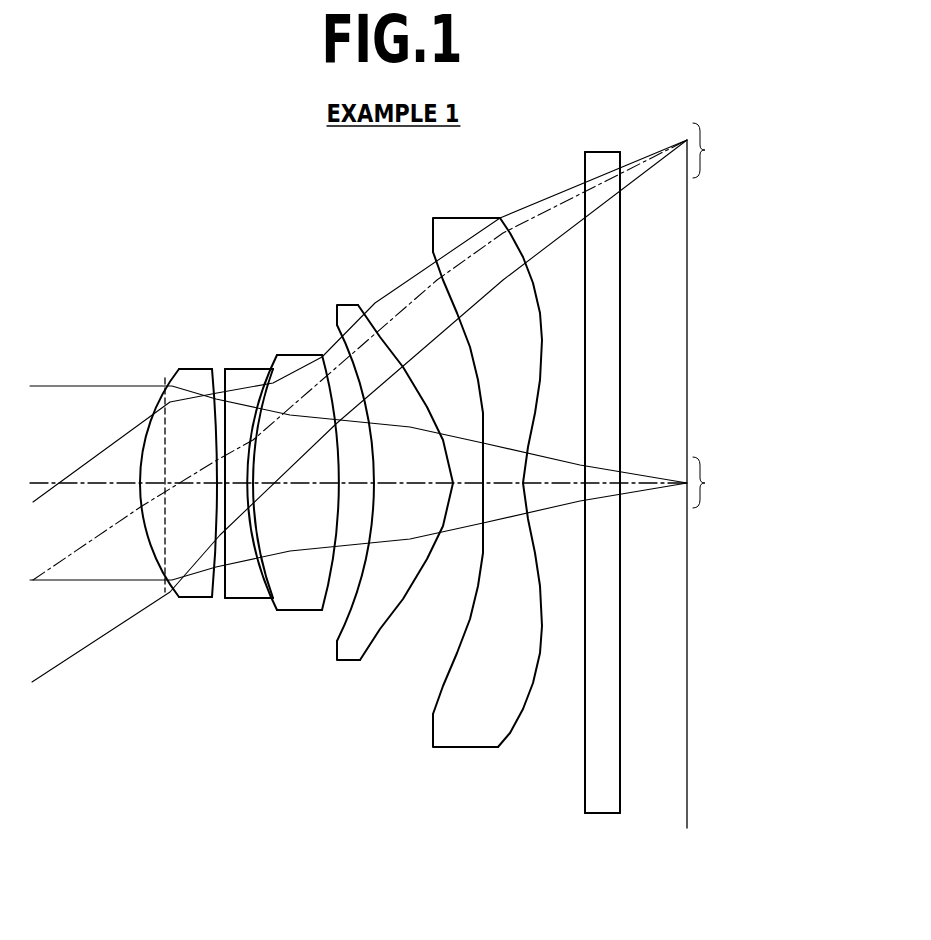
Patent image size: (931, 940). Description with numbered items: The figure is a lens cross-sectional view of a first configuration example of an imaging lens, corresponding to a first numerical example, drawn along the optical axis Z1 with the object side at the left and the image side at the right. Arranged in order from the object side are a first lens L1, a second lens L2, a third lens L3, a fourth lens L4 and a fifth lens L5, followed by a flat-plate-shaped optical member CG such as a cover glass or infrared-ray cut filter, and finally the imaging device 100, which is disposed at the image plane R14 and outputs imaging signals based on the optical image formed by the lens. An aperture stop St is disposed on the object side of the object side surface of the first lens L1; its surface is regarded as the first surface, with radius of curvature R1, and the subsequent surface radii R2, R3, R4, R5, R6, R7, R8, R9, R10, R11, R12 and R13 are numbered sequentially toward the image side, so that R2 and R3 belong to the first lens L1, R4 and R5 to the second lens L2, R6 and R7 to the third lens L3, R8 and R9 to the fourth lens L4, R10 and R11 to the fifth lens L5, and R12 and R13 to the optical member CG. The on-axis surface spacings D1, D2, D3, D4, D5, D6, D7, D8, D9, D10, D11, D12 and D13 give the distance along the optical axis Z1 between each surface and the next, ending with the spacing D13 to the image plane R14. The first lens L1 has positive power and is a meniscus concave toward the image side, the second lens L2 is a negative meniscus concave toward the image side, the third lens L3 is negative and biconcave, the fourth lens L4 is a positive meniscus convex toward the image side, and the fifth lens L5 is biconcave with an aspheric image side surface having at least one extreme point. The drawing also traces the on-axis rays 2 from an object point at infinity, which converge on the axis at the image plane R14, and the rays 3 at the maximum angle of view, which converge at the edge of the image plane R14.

The aperture stop St is at (137, 441).
The first surface radius of curvature R1 is at (166, 400).
The first lens L1 is at (162, 521).
The second lens L2 is at (232, 521).
The third lens L3 is at (293, 514).
The fourth lens L4 is at (380, 523).
The fifth lens L5 is at (461, 516).
The optical member CG is at (638, 507).
The optical axis Z1 is at (44, 481).
The on-axis rays 2 is at (707, 482).
The rays at the maximum angle of view 3 is at (707, 150).
The imaging device 100 is at (755, 484).
The image plane R14 is at (688, 532).
The on-axis surface spacing D1 is at (158, 480).
The on-axis surface spacing D2 is at (200, 480).
The on-axis surface spacing D3 is at (218, 502).
The on-axis surface spacing D4 is at (240, 480).
The on-axis surface spacing D5 is at (280, 480).
The on-axis surface spacing D6 is at (318, 497).
The on-axis surface spacing D7 is at (358, 478).
The on-axis surface spacing D8 is at (428, 479).
The on-axis surface spacing D9 is at (466, 490).
The on-axis surface spacing D10 is at (508, 478).
The on-axis surface spacing D11 is at (562, 480).
The on-axis surface spacing D12 is at (603, 483).
The on-axis surface spacing D13 is at (641, 483).
The second surface radius of curvature R2 is at (177, 595).
The third surface radius of curvature R3 is at (218, 597).
The fourth surface radius of curvature R4 is at (222, 598).
The fifth surface radius of curvature R5 is at (268, 598).
The sixth surface radius of curvature R6 is at (280, 612).
The seventh surface radius of curvature R7 is at (326, 610).
The eighth surface radius of curvature R8 is at (337, 636).
The ninth surface radius of curvature R9 is at (380, 642).
The tenth surface radius of curvature R10 is at (440, 687).
The eleventh surface radius of curvature R11 is at (513, 727).
The twelfth surface radius of curvature R12 is at (583, 772).
The thirteenth surface radius of curvature R13 is at (621, 770).